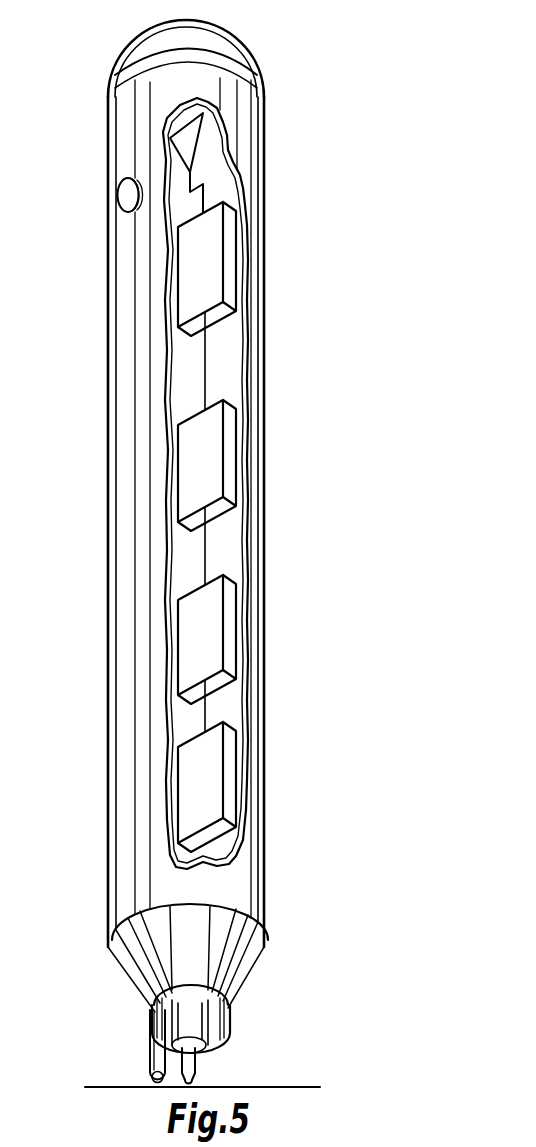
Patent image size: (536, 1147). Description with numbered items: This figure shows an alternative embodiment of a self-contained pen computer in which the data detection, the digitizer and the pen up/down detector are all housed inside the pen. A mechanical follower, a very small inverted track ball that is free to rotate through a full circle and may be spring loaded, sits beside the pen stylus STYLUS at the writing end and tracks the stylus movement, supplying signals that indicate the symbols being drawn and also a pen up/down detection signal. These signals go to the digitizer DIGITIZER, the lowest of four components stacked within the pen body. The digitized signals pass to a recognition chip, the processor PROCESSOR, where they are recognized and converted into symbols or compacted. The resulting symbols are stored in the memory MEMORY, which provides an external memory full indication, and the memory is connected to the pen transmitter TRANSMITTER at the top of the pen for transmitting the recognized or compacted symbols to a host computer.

The pen transmitter TRANSMITTER is at (232, 263).
The memory MEMORY is at (232, 447).
The recognition chip PROCESSOR is at (232, 607).
The digitizer DIGITIZER is at (232, 765).
The pen stylus STYLUS is at (197, 1061).